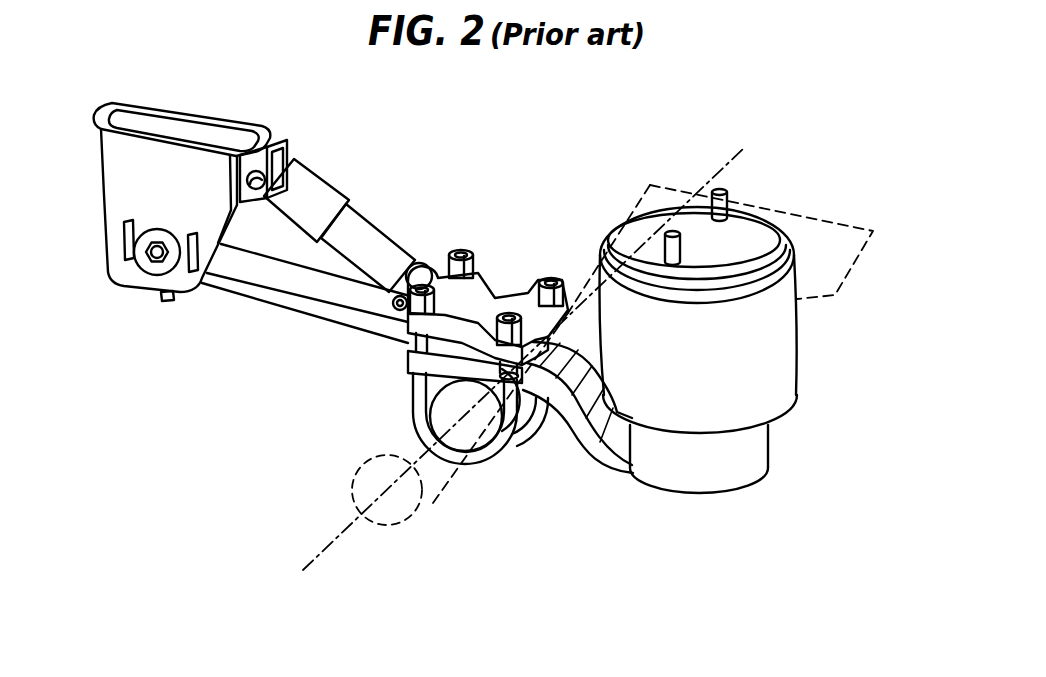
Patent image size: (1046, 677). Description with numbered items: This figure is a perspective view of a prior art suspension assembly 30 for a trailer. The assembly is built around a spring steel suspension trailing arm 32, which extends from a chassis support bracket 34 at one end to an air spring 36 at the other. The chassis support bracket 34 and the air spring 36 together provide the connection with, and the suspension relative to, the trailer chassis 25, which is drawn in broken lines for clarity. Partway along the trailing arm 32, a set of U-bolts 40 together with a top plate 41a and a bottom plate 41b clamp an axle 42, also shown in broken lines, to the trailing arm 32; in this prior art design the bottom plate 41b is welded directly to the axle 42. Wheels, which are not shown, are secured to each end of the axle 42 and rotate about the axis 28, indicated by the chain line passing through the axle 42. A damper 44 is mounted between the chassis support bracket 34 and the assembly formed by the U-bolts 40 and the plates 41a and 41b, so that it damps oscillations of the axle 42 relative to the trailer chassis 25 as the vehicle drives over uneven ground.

The trailer chassis 25 is at (804, 214).
The axis 28 is at (333, 546).
The prior art suspension assembly 30 is at (428, 211).
The suspension trailing arm 32 is at (311, 318).
The chassis support bracket 34 is at (171, 104).
The air spring 36 is at (798, 367).
The U-bolts 40 is at (543, 427).
The top plate 41a is at (499, 299).
The bottom plate 41b is at (423, 366).
The axle 42 is at (434, 503).
The damper 44 is at (341, 192).